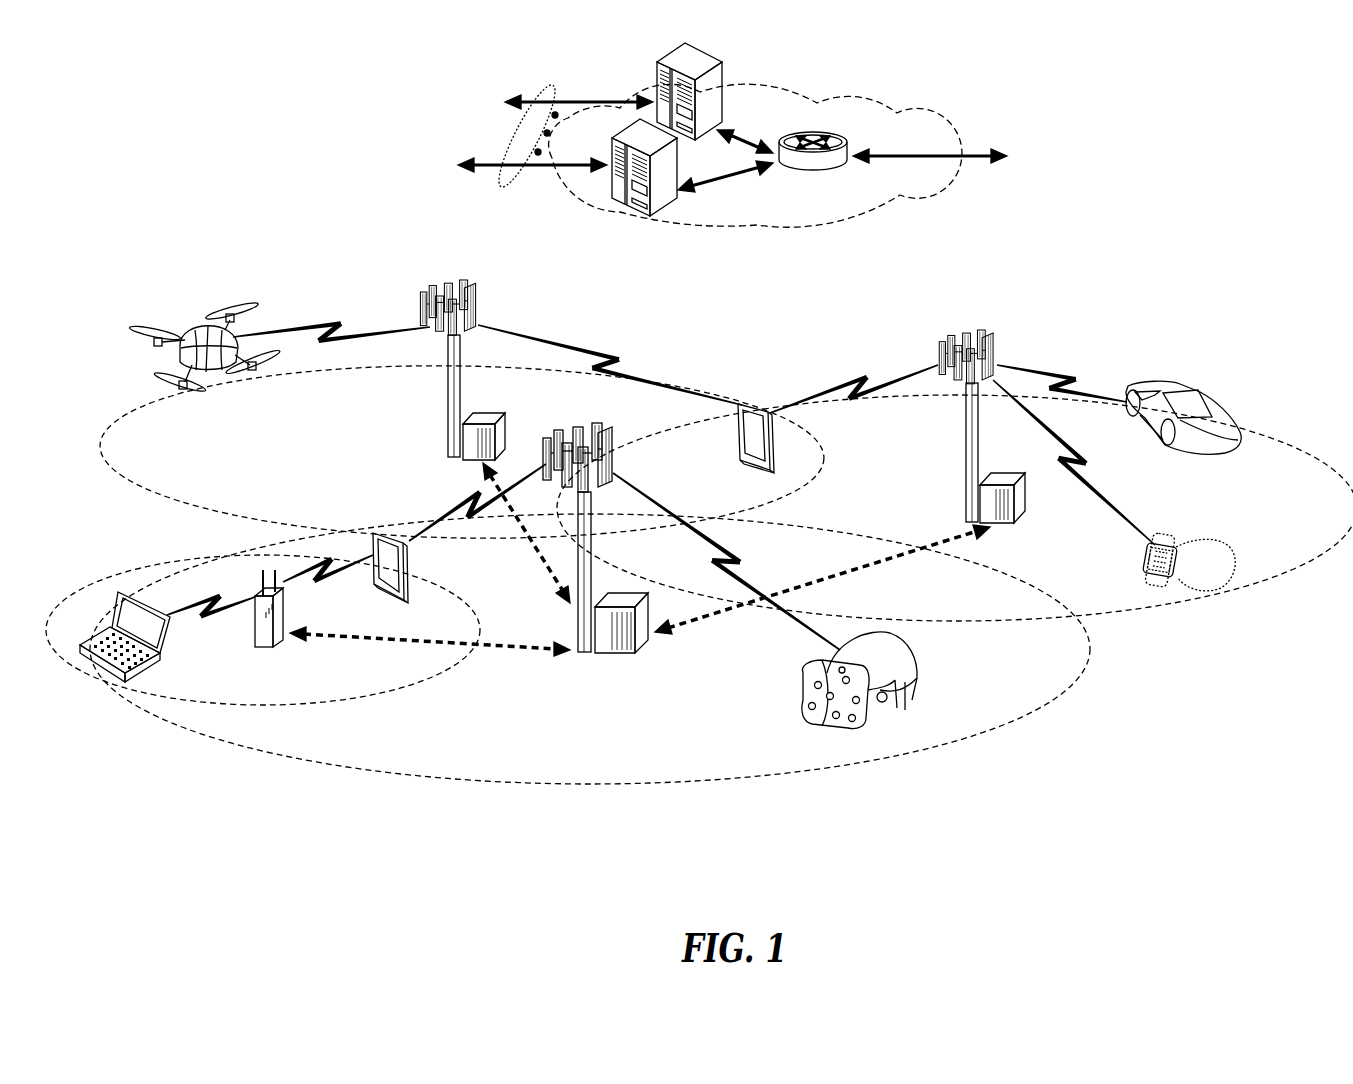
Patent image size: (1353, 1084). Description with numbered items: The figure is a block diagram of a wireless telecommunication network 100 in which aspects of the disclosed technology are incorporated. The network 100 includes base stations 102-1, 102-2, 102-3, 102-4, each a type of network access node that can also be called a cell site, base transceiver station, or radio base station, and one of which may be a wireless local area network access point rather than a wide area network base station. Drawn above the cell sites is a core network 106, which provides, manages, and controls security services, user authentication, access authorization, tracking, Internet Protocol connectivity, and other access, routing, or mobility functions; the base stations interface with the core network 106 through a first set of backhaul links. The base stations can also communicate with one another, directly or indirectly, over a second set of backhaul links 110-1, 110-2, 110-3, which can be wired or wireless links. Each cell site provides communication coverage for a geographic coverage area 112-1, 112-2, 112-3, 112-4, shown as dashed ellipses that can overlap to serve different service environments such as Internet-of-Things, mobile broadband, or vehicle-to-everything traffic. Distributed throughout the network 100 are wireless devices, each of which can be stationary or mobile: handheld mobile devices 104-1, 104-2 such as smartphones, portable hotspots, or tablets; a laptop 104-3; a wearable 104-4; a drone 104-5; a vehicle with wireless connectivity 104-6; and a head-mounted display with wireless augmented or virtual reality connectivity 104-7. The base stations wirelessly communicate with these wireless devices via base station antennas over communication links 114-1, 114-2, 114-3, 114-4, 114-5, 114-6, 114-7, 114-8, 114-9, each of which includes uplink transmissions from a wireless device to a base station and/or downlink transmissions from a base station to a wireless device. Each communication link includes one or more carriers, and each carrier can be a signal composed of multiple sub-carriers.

The wireless telecommunication network 100 is at (1256, 144).
The core network 106 is at (843, 224).
The base station 102-1 is at (580, 655).
The base station 102-2 is at (447, 407).
The base station 102-3 is at (962, 440).
The base station 102-4 is at (255, 643).
The handheld mobile device 104-1 is at (407, 580).
The handheld mobile device 104-2 is at (737, 440).
The laptop 104-3 is at (103, 673).
The wearable 104-4 is at (1165, 542).
The drone 104-5 is at (217, 373).
The vehicle with wireless connectivity 104-6 is at (1203, 392).
The head-mounted display with wireless AR/VR connectivity 104-7 is at (918, 667).
The backhaul link 110-1 is at (323, 638).
The backhaul link 110-2 is at (883, 563).
The backhaul link 110-3 is at (543, 560).
The geographic coverage area 112-1 is at (505, 785).
The geographic coverage area 112-2 is at (388, 695).
The geographic coverage area 112-3 is at (163, 513).
The geographic coverage area 112-4 is at (1250, 438).
The communication link 114-1 is at (740, 563).
The communication link 114-2 is at (470, 510).
The communication link 114-3 is at (180, 612).
The communication link 114-4 is at (325, 582).
The communication link 114-5 is at (333, 325).
The communication link 114-6 is at (612, 357).
The communication link 114-7 is at (850, 373).
The communication link 114-8 is at (1088, 480).
The communication link 114-9 is at (1053, 367).